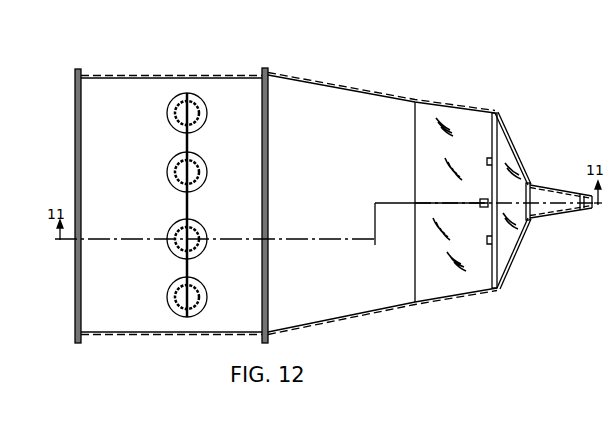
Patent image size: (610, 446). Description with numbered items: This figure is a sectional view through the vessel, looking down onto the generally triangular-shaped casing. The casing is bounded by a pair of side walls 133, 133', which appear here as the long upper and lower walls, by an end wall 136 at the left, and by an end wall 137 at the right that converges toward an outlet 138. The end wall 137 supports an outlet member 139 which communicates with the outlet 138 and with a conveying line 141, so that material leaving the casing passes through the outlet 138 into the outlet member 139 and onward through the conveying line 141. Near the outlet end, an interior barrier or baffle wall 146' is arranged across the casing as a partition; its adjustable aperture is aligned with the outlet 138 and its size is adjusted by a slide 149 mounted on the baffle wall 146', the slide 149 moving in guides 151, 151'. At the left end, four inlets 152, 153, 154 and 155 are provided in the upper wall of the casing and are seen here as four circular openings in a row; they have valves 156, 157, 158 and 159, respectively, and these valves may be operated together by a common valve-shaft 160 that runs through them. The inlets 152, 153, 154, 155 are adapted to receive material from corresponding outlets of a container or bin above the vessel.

The side wall 133' is at (171, 61).
The side wall 133 is at (171, 352).
The end wall 136 is at (75, 287).
The valve 159 is at (170, 109).
The inlet 155 is at (176, 115).
The valve 158 is at (170, 168).
The inlet 154 is at (176, 174).
The valve 157 is at (170, 234).
The inlet 153 is at (176, 247).
The valve 156 is at (170, 292).
The inlet 152 is at (176, 300).
The common valve-shaft 160 is at (188, 210).
The slide 149 is at (498, 168).
The baffle wall 146' is at (514, 139).
The end wall 137 is at (511, 264).
The outlet 138 is at (533, 190).
The outlet member 139 is at (543, 190).
The conveying line 141 is at (583, 212).
The guide 151' is at (472, 151).
The guide 151 is at (471, 228).